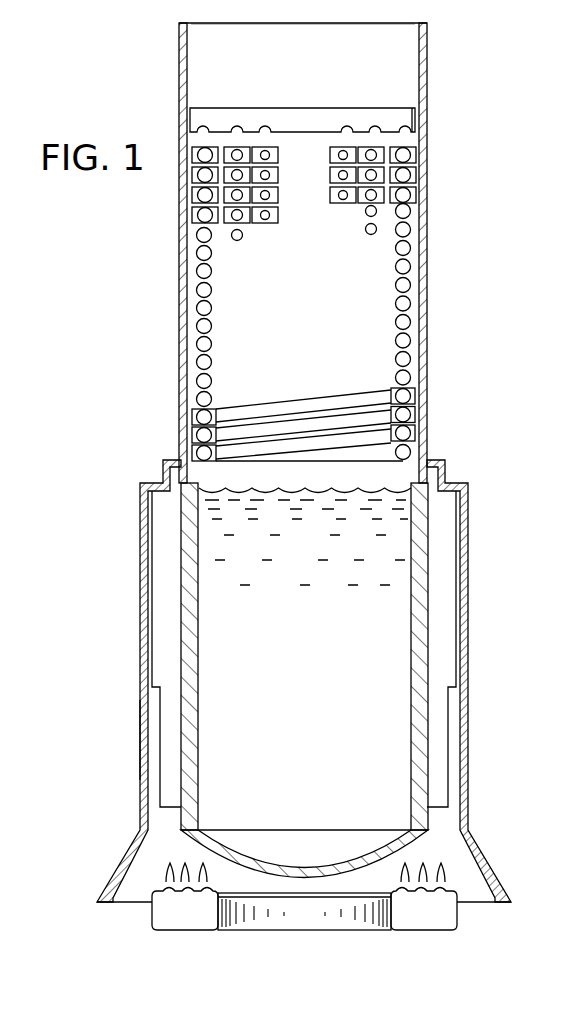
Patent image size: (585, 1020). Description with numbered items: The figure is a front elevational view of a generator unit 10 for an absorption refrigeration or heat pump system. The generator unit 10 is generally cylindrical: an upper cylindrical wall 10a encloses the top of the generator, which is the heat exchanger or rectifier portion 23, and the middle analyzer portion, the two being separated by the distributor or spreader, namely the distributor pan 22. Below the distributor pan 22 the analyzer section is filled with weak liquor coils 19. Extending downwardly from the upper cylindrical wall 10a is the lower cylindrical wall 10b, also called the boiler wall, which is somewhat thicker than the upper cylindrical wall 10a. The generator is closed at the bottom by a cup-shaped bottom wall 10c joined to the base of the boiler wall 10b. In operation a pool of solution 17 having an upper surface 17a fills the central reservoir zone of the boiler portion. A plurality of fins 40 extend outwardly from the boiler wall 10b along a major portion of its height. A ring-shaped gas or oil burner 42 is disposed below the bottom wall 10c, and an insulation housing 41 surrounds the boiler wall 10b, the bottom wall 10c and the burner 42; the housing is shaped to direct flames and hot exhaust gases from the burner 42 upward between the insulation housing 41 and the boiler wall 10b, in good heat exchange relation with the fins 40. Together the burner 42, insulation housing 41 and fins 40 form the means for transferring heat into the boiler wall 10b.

The generator unit 10 is at (166, 364).
The upper cylindrical wall 10a is at (178, 297).
The lower cylindrical wall 10b is at (422, 550).
The cup-shaped bottom wall 10c is at (281, 870).
The pool of solution 17 is at (318, 641).
The upper surface 17a is at (322, 492).
The weak liquor coils 19 is at (406, 224).
The distributor pan 22 is at (390, 120).
The heat exchanger or rectifier portion 23 is at (388, 78).
The fins 40 is at (163, 604).
The insulation housing 41 is at (140, 740).
The ring-shaped gas or oil burner 42 is at (443, 912).